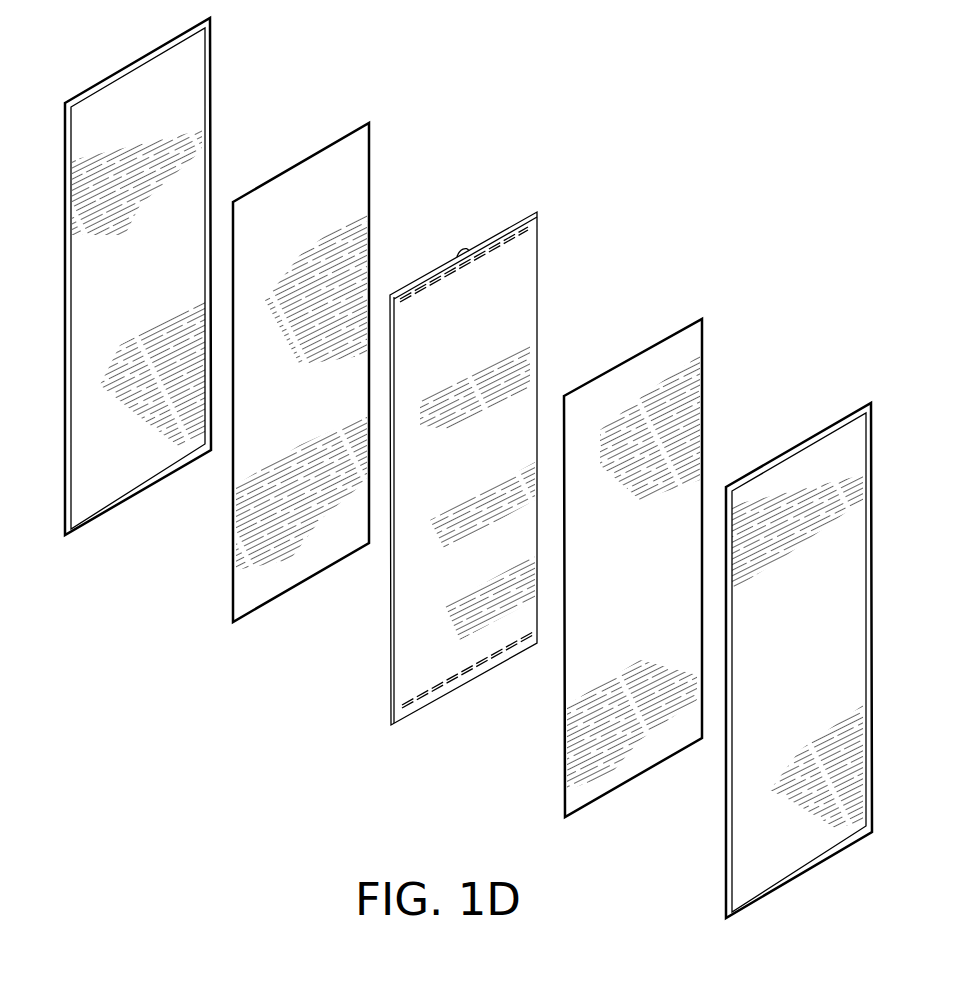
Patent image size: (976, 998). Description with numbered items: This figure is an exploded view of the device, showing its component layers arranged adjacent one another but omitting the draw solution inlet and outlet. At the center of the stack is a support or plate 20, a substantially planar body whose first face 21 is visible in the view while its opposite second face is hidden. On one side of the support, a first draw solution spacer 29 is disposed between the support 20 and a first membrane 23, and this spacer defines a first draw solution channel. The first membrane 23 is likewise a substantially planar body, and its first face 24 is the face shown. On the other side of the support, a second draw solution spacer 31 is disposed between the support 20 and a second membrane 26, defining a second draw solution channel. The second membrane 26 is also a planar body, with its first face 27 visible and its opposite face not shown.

The support 20 is at (508, 264).
The first face 21 is at (492, 325).
The first membrane 23 is at (832, 460).
The first face 24 is at (835, 640).
The second membrane 26 is at (116, 106).
The first face 27 is at (110, 277).
The first draw solution spacer 29 is at (676, 358).
The second draw solution spacer 31 is at (317, 176).